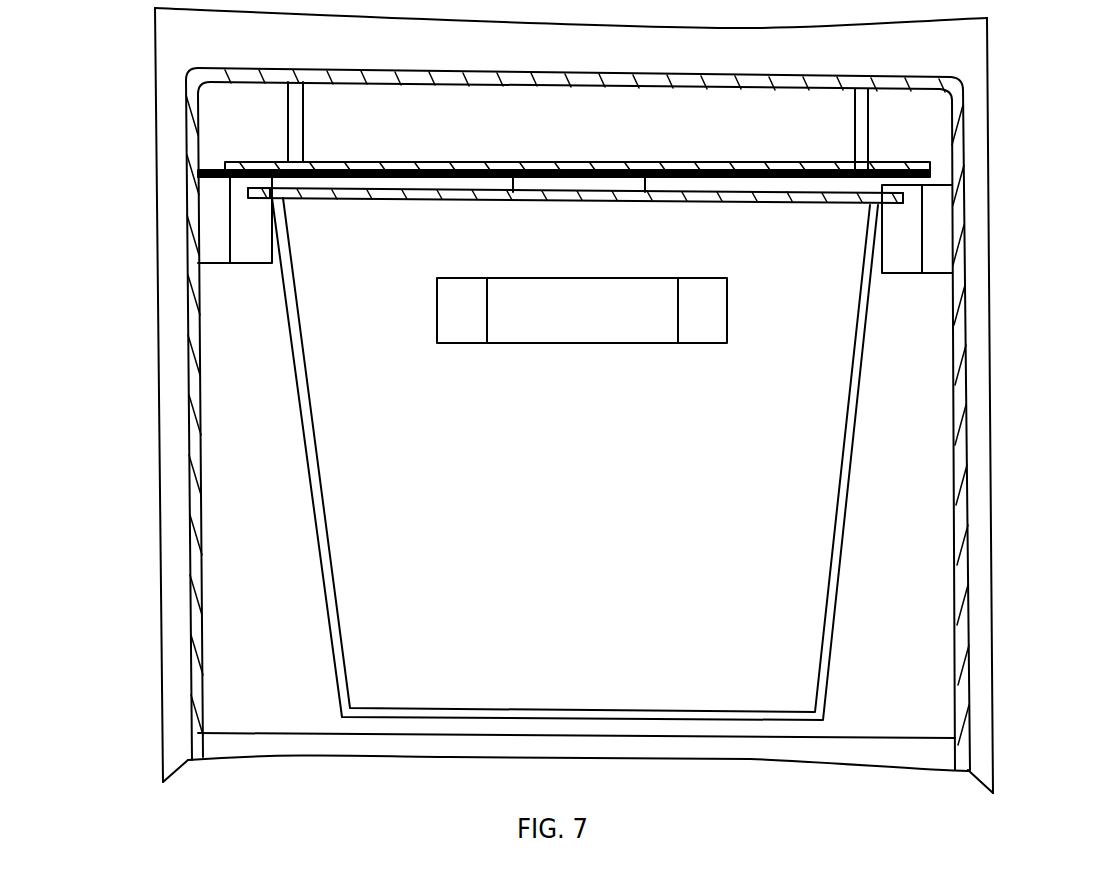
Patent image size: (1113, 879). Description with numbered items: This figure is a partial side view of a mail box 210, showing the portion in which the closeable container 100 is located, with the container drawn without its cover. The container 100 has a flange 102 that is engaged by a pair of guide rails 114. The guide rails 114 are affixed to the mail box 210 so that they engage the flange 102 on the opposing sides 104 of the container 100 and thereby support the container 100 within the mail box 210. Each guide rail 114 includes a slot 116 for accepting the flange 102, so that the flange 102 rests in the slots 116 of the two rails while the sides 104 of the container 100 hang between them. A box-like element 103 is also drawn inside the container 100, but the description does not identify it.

The closeable container 100 is at (788, 226).
The flange 102 is at (258, 195).
The control box 103 is at (560, 343).
The opposing sides 104 is at (307, 467).
The guide rails 114 is at (238, 242).
The slot 116 is at (253, 193).
The mail box 210 is at (172, 147).